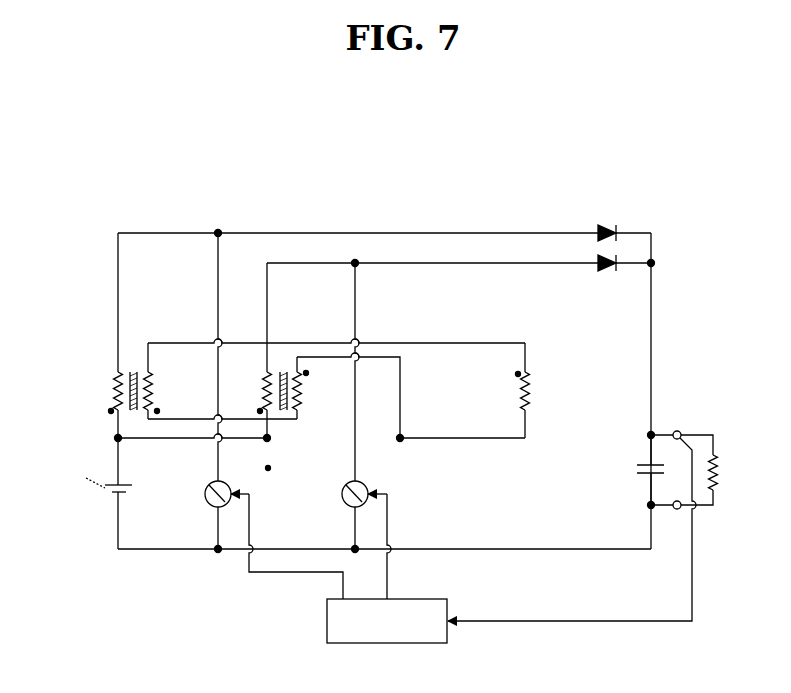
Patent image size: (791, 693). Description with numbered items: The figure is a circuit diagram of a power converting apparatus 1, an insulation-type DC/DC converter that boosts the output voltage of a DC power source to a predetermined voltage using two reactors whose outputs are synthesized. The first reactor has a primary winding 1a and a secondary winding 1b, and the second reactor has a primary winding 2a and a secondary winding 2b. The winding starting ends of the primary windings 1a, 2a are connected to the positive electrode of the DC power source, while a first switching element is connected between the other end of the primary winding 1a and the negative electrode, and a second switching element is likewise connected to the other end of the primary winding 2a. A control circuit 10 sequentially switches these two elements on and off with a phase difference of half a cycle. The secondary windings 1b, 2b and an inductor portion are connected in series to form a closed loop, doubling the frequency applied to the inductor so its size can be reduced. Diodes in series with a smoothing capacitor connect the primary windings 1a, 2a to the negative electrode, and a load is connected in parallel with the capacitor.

The power converting apparatus 1 is at (388, 207).
The primary winding 1a is at (114, 386).
The secondary winding 1b is at (152, 386).
The primary winding 2a is at (262, 386).
The secondary winding 2b is at (303, 396).
The control circuit 10 is at (325, 621).